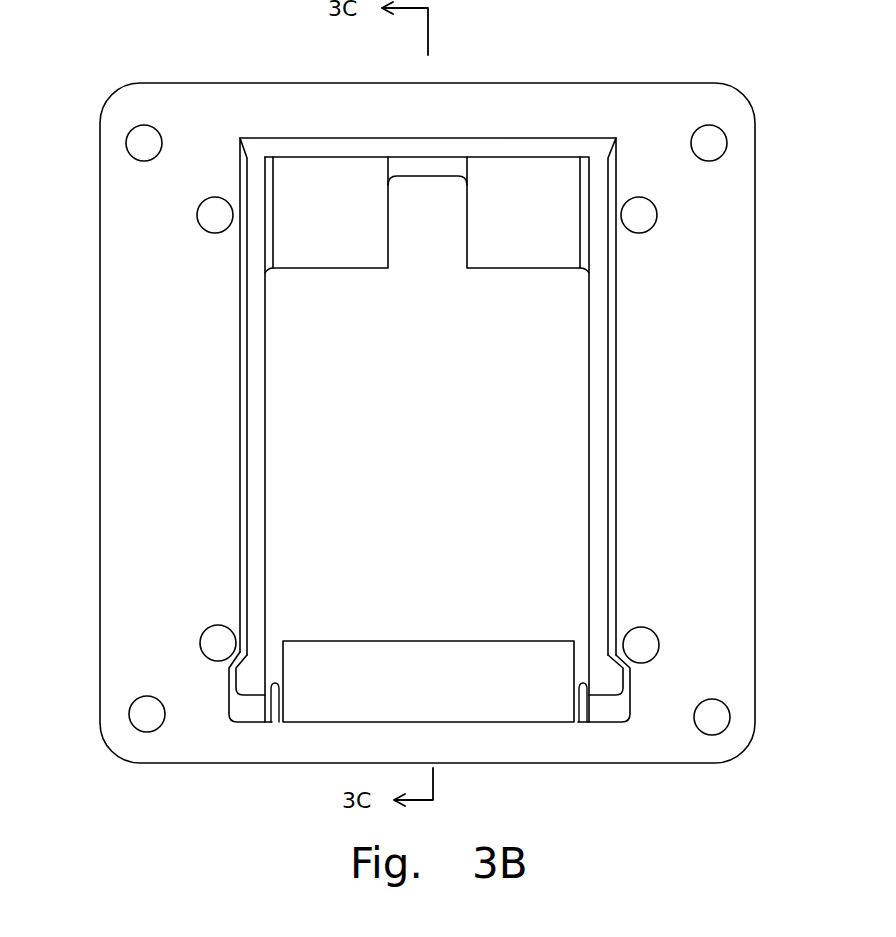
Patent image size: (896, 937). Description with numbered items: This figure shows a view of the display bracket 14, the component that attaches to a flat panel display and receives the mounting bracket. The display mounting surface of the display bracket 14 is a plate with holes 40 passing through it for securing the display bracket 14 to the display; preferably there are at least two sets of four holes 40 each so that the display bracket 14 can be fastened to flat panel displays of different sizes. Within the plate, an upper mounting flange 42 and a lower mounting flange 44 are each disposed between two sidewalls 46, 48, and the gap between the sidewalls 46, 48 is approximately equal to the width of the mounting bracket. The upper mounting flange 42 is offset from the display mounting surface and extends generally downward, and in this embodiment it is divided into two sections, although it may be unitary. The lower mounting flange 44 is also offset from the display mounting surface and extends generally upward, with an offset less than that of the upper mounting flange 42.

The display bracket 14 is at (645, 83).
The holes 40 is at (652, 230).
The upper mounting flange 42 is at (480, 268).
The lower mounting flange 44 is at (513, 640).
The sidewall 46 is at (258, 482).
The sidewall 48 is at (600, 492).